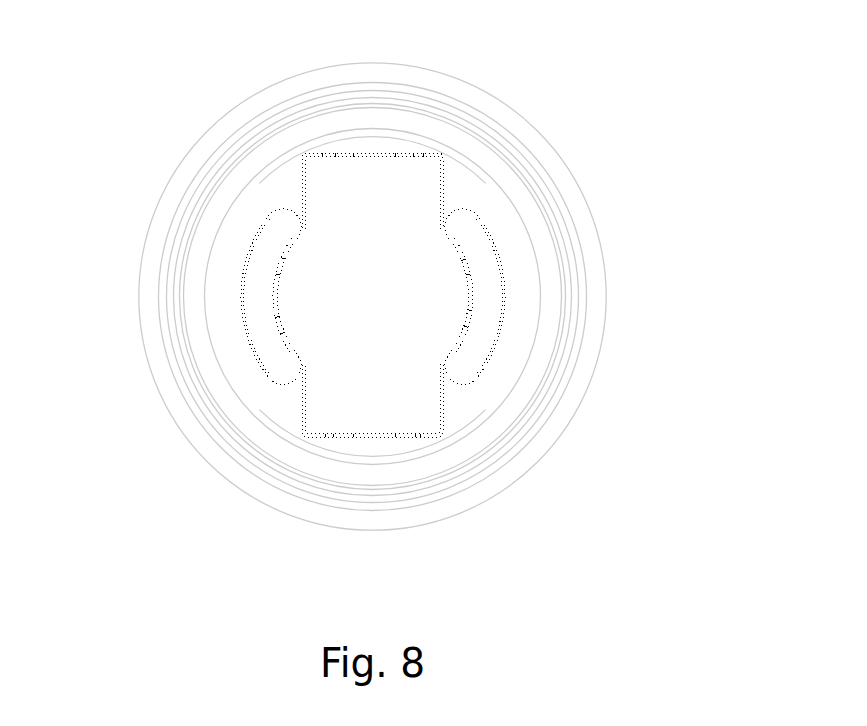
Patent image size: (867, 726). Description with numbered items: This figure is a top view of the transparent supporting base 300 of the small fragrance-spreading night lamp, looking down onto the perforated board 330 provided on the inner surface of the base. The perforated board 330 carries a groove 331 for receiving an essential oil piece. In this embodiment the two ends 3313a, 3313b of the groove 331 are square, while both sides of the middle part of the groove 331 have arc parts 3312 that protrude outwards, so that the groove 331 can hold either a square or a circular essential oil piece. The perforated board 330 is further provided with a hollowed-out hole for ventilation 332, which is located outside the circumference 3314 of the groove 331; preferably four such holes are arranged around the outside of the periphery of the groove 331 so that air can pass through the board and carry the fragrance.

The transparent supporting base 300 is at (222, 92).
The perforated board 330 is at (513, 242).
The groove 331 is at (270, 302).
The hollowed-out hole for ventilation 332 is at (371, 327).
The arc parts 3312 is at (465, 327).
The end of the groove 3313a is at (362, 170).
The end of the groove 3313b is at (368, 422).
The circumference of the groove 3314 is at (277, 283).